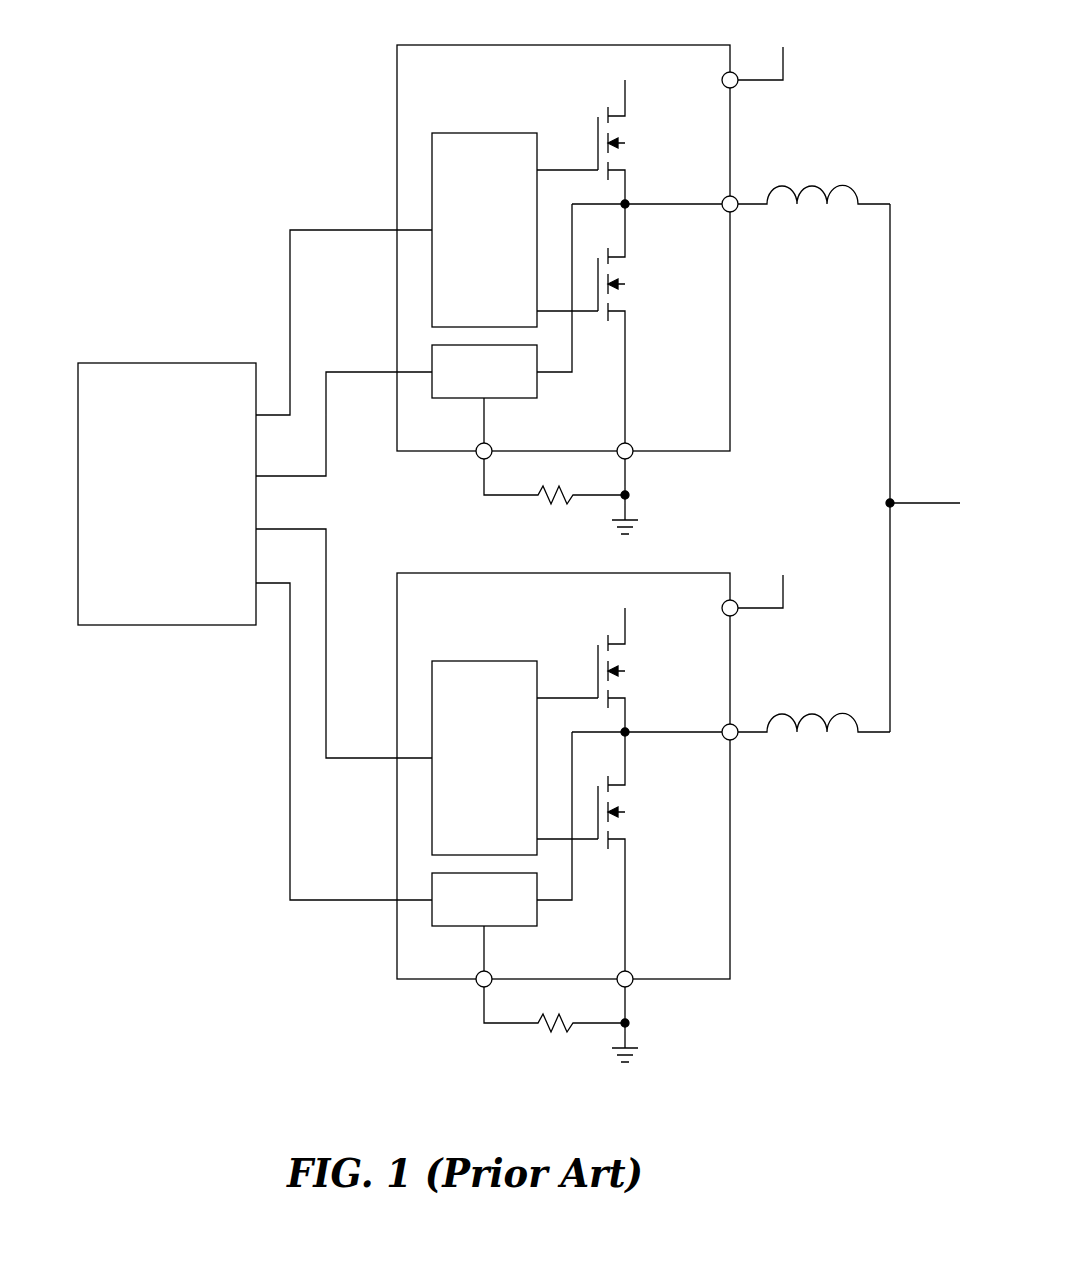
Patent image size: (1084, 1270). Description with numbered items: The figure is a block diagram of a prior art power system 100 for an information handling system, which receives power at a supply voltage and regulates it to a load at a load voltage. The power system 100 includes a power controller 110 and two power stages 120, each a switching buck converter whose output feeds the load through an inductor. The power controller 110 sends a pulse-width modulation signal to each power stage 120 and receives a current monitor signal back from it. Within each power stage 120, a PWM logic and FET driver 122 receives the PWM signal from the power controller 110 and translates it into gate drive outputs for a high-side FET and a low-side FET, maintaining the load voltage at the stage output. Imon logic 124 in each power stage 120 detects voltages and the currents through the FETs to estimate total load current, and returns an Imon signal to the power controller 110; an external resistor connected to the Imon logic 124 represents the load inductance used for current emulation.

The power system 100 is at (80, 1060).
The power controller 110 is at (93, 362).
The power stage 120 is at (635, 534).
The PWM logic and FET driver 122 is at (445, 132).
The Imon logic 124 is at (445, 401).